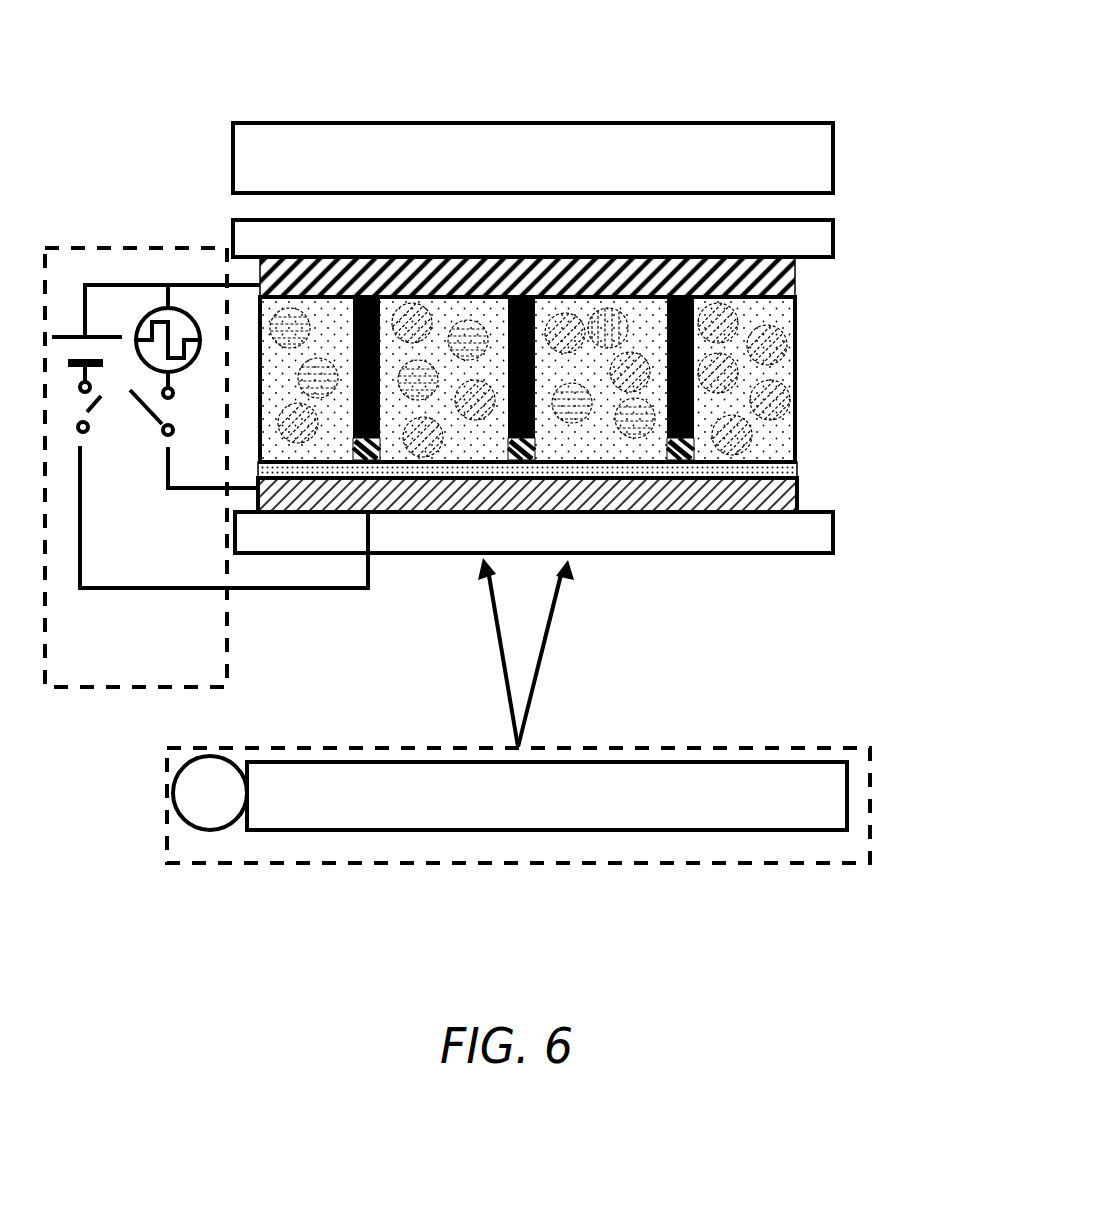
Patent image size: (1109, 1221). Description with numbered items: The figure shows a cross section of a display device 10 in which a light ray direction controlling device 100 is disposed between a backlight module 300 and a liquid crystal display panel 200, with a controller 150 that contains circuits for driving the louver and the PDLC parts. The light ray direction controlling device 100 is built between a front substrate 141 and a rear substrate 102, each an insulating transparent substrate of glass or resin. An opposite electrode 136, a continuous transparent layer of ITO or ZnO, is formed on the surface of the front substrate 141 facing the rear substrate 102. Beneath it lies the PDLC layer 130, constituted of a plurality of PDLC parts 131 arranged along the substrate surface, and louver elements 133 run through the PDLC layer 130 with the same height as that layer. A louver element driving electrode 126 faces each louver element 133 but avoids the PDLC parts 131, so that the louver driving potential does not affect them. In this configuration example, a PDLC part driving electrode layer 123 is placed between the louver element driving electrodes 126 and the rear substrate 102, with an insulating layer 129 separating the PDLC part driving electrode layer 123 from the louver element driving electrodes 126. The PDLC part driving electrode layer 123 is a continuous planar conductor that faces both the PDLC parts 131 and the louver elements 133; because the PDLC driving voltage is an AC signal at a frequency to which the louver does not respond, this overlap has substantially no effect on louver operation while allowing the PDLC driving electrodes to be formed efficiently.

The display device 10 is at (661, 81).
The liquid crystal display panel 200 is at (782, 172).
The front substrate 141 is at (692, 252).
The opposite electrode 136 is at (270, 258).
The PDLC layer 130 is at (609, 492).
The PDLC part 131 is at (798, 323).
The louver element 133 is at (538, 452).
The louver element driving electrode 126 is at (375, 455).
The insulating layer 129 is at (795, 470).
The PDLC part driving electrode layer 123 is at (797, 487).
The rear substrate 102 is at (534, 532).
The light ray direction controlling device 100 is at (538, 409).
The controller 150 is at (152, 627).
The backlight module 300 is at (585, 863).